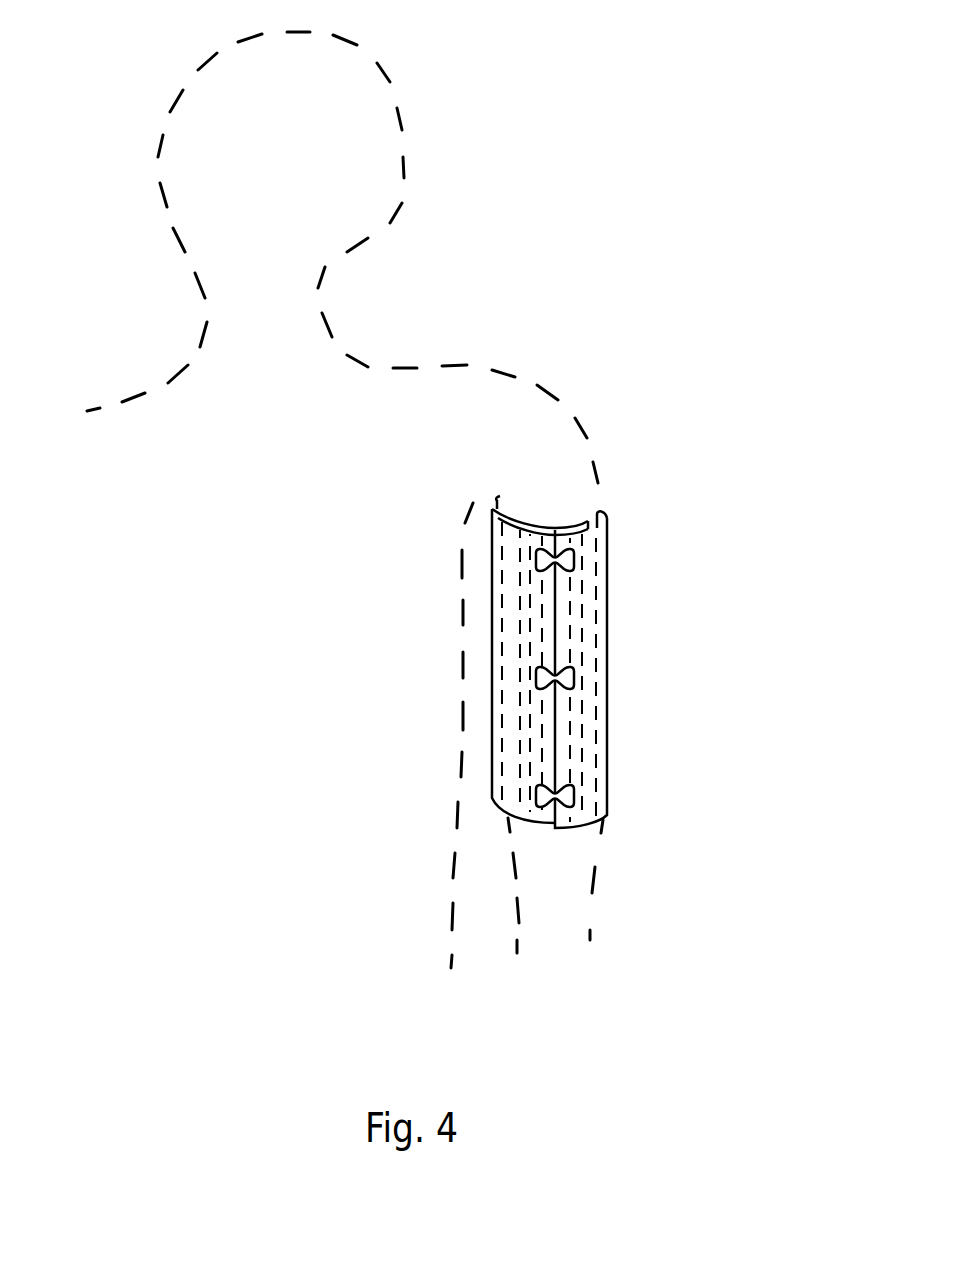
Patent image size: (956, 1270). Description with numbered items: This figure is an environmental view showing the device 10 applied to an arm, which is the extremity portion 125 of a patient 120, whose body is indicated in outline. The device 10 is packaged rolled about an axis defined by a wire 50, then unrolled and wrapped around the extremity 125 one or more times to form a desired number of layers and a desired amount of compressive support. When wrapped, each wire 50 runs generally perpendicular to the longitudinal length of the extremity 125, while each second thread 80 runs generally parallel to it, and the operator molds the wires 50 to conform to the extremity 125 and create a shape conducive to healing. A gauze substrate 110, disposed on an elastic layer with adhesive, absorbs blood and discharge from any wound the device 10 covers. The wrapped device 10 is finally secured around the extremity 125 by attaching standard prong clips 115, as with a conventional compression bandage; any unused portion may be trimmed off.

The device 10 is at (583, 626).
The wire 50 is at (530, 628).
The second thread 80 is at (500, 731).
The gauze substrate 110 is at (555, 527).
The prong clips 115 is at (668, 621).
The patient 120 is at (380, 63).
The extremity portion 125 is at (578, 882).